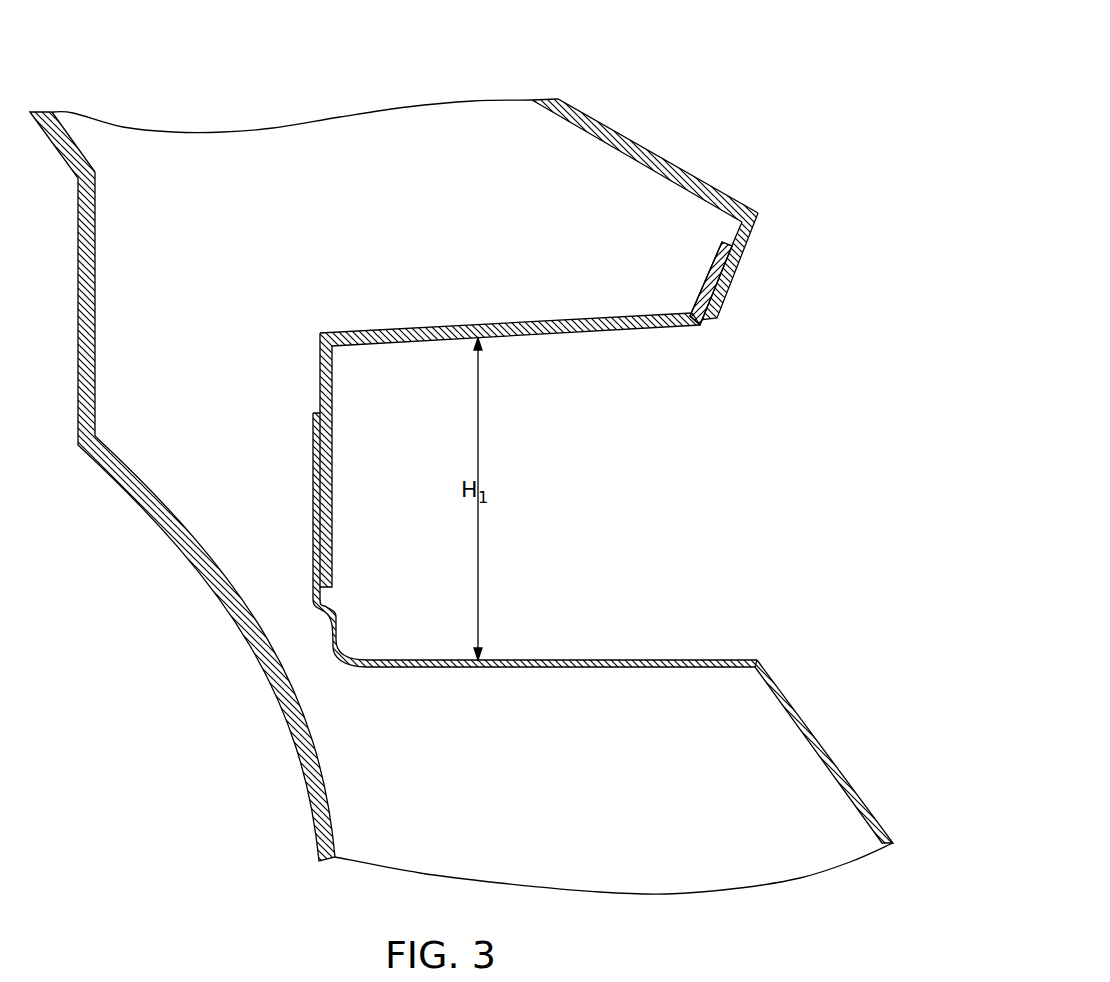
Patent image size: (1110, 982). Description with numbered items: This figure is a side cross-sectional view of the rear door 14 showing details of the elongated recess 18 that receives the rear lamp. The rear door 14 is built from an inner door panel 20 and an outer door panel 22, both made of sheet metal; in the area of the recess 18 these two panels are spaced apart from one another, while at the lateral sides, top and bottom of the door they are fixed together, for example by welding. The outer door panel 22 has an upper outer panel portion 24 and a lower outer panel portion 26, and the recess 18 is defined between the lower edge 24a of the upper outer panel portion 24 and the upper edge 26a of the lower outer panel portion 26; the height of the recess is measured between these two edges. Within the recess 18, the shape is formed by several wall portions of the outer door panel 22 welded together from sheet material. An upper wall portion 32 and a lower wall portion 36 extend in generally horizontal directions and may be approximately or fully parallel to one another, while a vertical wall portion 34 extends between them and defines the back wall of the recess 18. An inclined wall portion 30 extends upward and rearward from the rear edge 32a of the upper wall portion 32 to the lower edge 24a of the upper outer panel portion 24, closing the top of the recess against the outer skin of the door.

The rear door 14 is at (585, 58).
The elongated recess 18 is at (712, 479).
The inner door panel 20 is at (149, 520).
The outer door panel 22 is at (686, 201).
The upper outer panel portion 24 is at (637, 143).
The lower edge of the upper outer panel portion 24a is at (758, 213).
The lower outer panel portion 26 is at (826, 745).
The upper edge of the lower outer panel portion 26a is at (758, 659).
The inclined wall portion 30 is at (733, 278).
The upper wall portion 32 is at (578, 334).
The rear edge of the upper wall portion 32a is at (703, 327).
The vertical wall portion 34 is at (333, 442).
The lower wall portion 36 is at (630, 660).